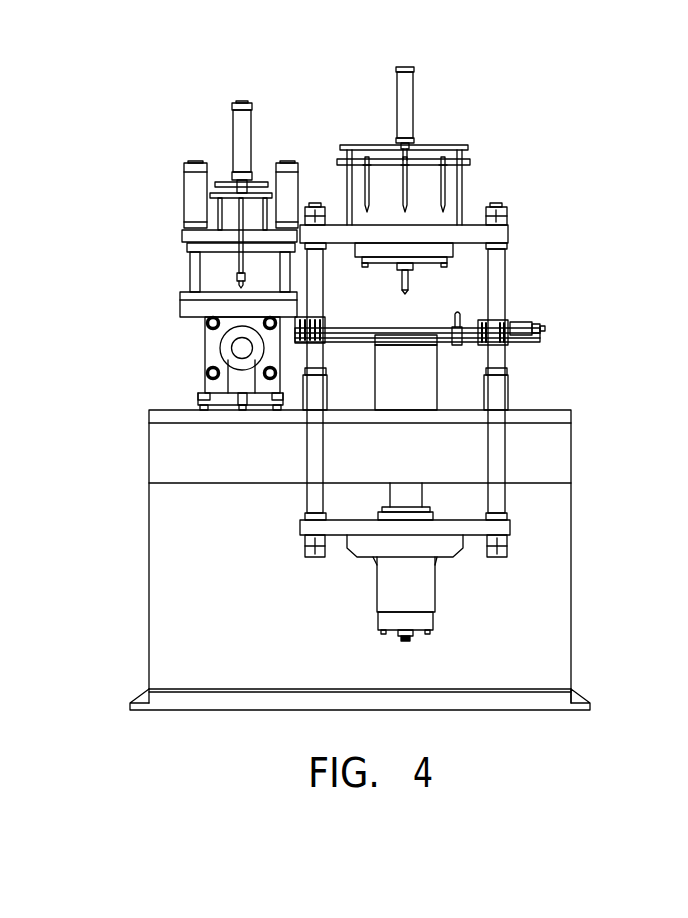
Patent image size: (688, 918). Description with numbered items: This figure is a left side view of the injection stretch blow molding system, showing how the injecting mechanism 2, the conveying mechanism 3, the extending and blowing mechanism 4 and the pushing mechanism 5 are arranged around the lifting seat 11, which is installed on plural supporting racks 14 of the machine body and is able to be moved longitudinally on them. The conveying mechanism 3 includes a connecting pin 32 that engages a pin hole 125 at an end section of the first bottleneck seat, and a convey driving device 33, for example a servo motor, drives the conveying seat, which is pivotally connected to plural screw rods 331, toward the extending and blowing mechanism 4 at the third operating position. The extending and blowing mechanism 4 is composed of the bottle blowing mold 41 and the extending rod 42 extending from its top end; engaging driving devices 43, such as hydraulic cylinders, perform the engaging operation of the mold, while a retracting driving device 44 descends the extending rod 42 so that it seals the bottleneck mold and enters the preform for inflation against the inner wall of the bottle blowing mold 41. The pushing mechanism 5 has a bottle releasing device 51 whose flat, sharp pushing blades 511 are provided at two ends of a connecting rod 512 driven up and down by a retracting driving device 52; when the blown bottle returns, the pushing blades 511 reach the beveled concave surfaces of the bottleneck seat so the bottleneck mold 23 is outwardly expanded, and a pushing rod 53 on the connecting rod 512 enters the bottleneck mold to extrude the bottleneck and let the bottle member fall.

The injecting mechanism 2 is at (420, 387).
The conveying mechanism 3 is at (476, 325).
The connecting pin 32 is at (460, 315).
The convey driving device 33 is at (517, 322).
The screw rods 331 is at (440, 346).
The extending and blowing mechanism 4 is at (189, 255).
The bottle blowing mold 41 is at (212, 347).
The extending rod 42 is at (240, 217).
The engaging driving devices 43 is at (240, 367).
The retracting driving device 44 is at (193, 197).
The pushing mechanism 5 is at (478, 131).
The bottle releasing device 51 is at (465, 190).
The pushing blades 511 is at (447, 212).
The connecting rod 512 is at (473, 162).
The retracting driving device 52 is at (403, 100).
The pushing rod 53 is at (400, 197).
The lifting seat 11 is at (498, 233).
The pin hole 125 is at (453, 247).
The supporting racks 14 is at (495, 275).
The bottleneck mold 23 is at (422, 583).